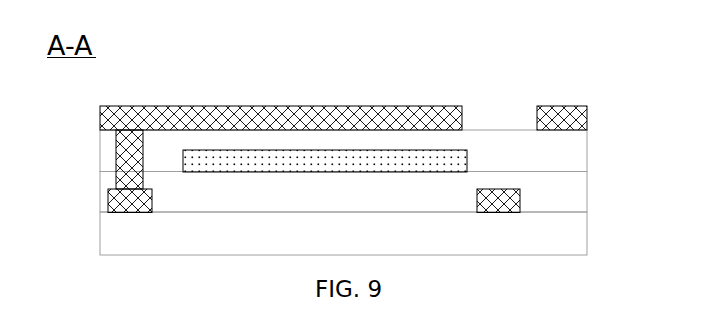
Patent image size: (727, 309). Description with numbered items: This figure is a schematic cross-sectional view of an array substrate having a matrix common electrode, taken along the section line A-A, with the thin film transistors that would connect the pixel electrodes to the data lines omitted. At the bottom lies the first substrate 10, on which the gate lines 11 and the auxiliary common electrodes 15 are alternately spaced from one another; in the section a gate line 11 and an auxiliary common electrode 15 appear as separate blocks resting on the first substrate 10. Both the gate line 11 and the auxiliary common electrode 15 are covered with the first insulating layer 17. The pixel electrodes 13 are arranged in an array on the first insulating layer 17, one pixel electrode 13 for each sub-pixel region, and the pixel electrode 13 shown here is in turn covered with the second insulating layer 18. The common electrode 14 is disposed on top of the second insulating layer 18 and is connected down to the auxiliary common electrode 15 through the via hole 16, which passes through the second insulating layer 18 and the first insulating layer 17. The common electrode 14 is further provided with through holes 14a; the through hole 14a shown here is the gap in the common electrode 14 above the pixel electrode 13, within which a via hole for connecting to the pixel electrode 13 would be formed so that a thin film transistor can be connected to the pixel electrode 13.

The first substrate 10 is at (583, 247).
The gate line 11 is at (520, 210).
The pixel electrode 13 is at (415, 152).
The common electrode 14 is at (100, 108).
The through hole 14a is at (501, 121).
The auxiliary common electrode 15 is at (108, 205).
The via hole 16 is at (116, 163).
The first insulating layer 17 is at (577, 177).
The second insulating layer 18 is at (578, 145).